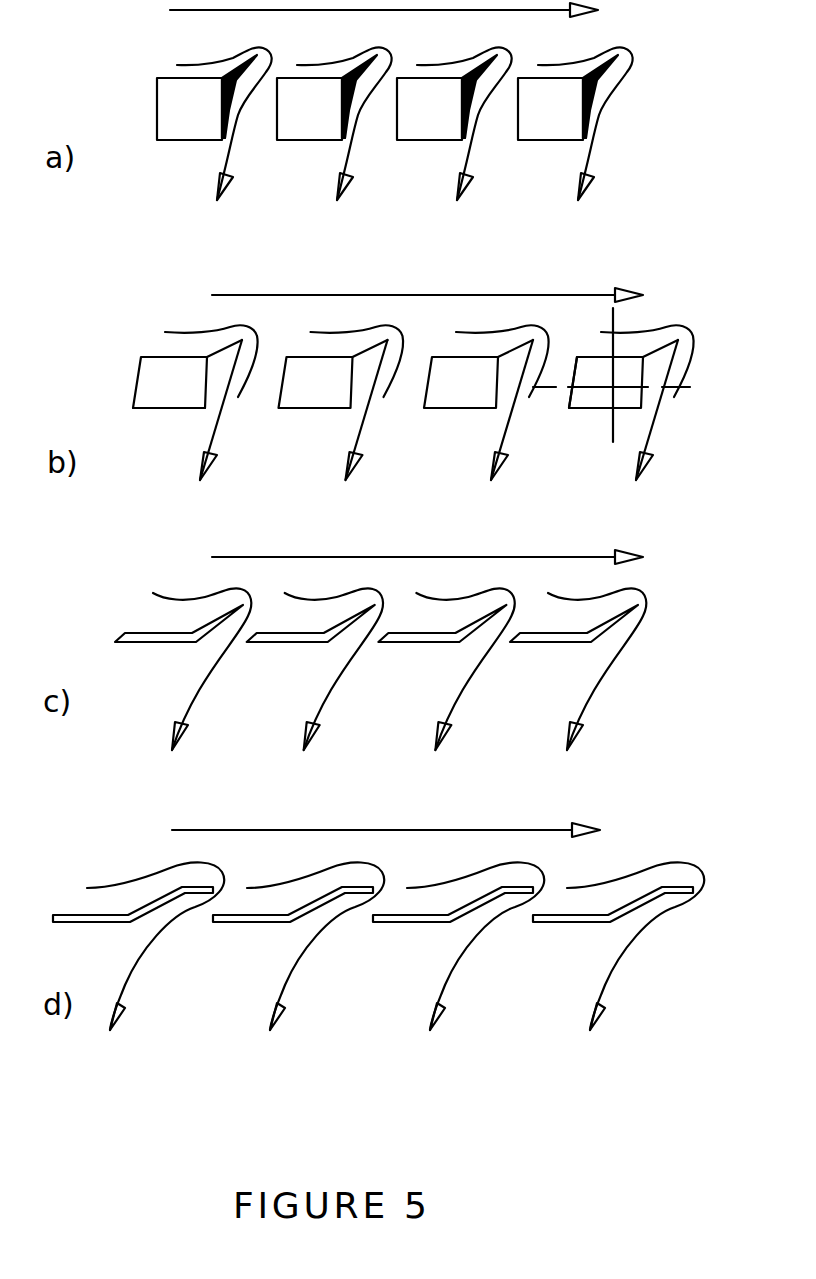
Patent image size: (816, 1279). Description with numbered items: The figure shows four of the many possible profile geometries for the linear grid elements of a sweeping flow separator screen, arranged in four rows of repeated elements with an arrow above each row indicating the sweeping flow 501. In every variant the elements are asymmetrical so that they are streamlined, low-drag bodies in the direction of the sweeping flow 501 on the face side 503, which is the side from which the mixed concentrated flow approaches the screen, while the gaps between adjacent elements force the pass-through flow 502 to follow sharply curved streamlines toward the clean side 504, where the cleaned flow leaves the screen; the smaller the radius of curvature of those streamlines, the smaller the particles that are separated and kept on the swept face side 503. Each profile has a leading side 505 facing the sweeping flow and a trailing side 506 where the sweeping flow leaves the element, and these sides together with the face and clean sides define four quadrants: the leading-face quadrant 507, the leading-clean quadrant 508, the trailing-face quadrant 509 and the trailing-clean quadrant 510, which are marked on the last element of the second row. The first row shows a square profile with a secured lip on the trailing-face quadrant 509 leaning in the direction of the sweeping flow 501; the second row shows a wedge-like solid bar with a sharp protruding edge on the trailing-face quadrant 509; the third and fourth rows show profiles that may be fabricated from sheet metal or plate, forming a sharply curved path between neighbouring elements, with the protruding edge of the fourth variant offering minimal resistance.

The sweeping flow 501 is at (215, 830).
The flow passing through the gaps 502 is at (288, 982).
The face side 503 is at (172, 300).
The clean side 504 is at (176, 410).
The leading side 505 is at (132, 385).
The trailing side 506 is at (238, 397).
The leading-face quadrant 507 is at (593, 372).
The leading-clean quadrant 508 is at (583, 395).
The trailing-face quadrant 509 is at (650, 375).
The trailing-clean quadrant 510 is at (628, 400).